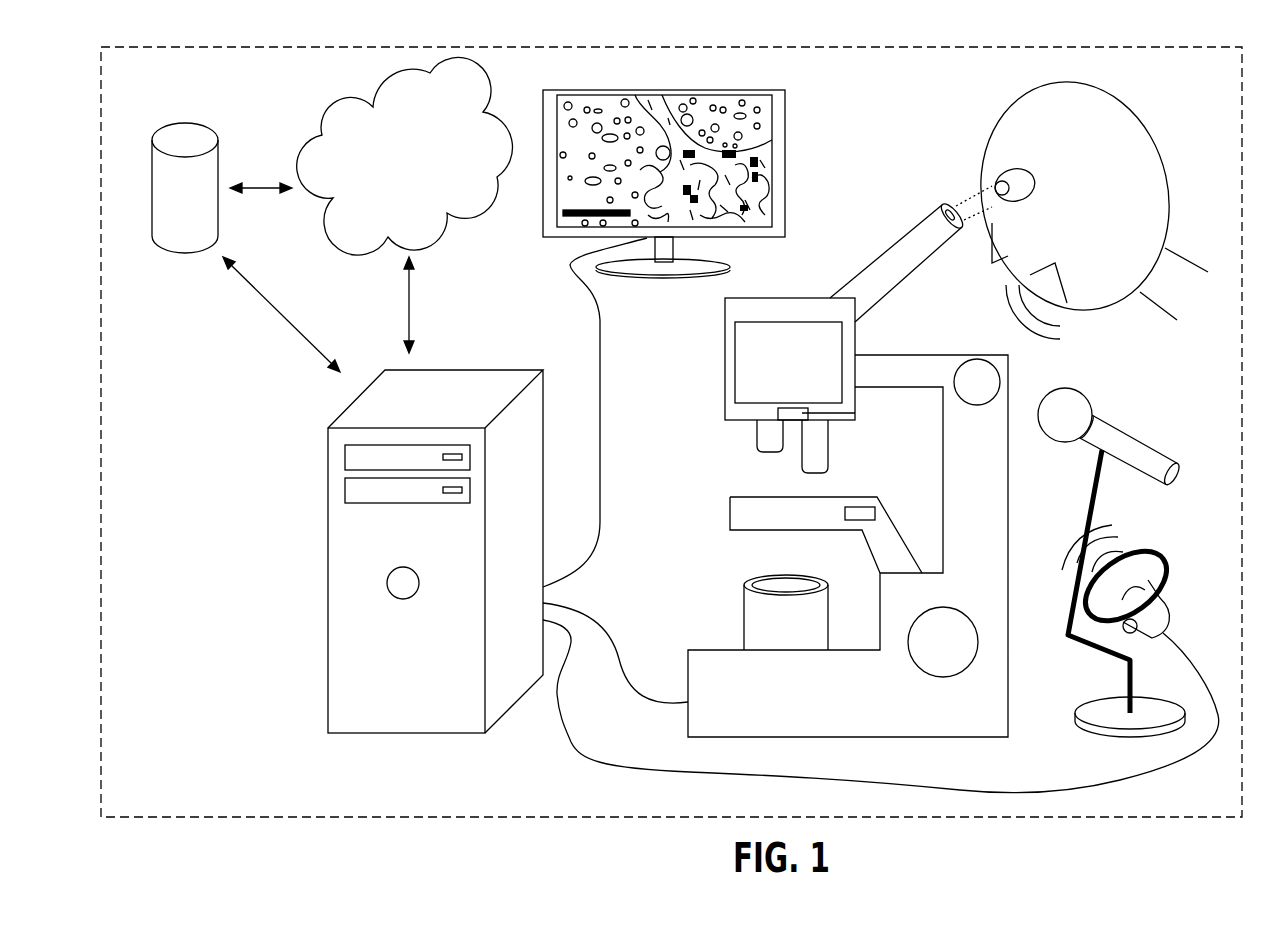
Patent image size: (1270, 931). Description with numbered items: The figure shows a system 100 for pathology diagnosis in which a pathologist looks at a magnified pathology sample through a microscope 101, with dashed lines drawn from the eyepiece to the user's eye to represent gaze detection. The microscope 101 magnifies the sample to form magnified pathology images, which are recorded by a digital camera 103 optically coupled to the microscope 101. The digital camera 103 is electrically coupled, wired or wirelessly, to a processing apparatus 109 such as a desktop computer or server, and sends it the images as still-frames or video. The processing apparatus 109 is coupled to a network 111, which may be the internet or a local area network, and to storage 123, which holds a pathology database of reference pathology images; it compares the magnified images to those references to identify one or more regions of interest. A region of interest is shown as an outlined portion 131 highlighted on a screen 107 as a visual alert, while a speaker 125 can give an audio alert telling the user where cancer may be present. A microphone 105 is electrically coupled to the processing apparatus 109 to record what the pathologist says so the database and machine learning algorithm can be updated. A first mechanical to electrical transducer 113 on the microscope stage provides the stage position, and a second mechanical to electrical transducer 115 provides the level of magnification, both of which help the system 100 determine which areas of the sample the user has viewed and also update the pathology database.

The system for pathology diagnosis 100 is at (150, 80).
The microscope 101 is at (853, 717).
The digital camera 103 is at (802, 394).
The microphone 105 is at (1128, 443).
The screen 107 is at (775, 148).
The processing apparatus 109 is at (408, 707).
The network 111 is at (465, 166).
The first mechanical to electrical transducer 113 is at (862, 512).
The second mechanical to electrical transducer 115 is at (855, 413).
The storage 123 is at (183, 237).
The speaker 125 is at (1148, 597).
The outlined portion 131 is at (760, 202).